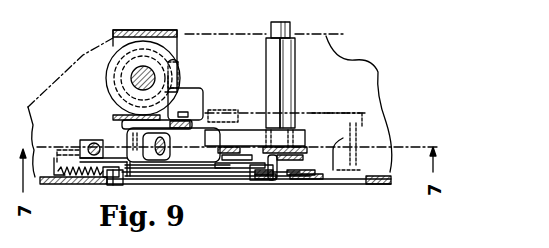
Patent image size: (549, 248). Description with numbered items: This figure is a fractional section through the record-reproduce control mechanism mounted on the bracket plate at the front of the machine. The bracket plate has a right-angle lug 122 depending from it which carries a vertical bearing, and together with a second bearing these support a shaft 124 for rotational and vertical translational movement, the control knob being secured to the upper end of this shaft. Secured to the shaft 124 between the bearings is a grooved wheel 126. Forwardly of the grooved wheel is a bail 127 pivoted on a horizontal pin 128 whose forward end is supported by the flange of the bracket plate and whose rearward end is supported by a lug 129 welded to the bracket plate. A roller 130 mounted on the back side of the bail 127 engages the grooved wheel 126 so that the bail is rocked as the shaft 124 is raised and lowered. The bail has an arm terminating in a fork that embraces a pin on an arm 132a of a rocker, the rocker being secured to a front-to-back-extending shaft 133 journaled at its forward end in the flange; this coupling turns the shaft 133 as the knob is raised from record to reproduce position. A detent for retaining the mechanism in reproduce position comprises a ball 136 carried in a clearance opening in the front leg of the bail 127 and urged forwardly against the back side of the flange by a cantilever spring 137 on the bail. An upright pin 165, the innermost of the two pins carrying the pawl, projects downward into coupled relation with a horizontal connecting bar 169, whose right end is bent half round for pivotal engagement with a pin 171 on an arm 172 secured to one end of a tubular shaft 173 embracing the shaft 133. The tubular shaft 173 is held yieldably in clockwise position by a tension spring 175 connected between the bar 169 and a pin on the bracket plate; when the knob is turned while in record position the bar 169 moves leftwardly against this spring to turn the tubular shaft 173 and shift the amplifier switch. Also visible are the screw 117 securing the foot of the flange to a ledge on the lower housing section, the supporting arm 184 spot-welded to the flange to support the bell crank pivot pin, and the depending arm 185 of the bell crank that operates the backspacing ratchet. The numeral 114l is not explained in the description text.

The right-angle lug 122 is at (133, 30).
The shaft 124 is at (160, 72).
The grooved wheel 126 is at (118, 55).
The horizontal pin 128 is at (190, 80).
The lug 129 is at (197, 97).
The roller 130 is at (125, 118).
The shaft 133 is at (283, 27).
The ball 136 is at (173, 179).
The cantilever spring 137 is at (113, 118).
The upright pin 165 is at (228, 110).
The horizontal connecting bar 169 is at (100, 131).
The pin 171 is at (310, 113).
The arm 172 is at (310, 150).
The tubular shaft 173 is at (359, 104).
The tension spring 175 is at (82, 184).
The supporting arm 184 is at (313, 184).
The depending arm 185 is at (244, 113).
The screw 117 is at (126, 184).
The bail 127 is at (226, 184).
The arm of rocker 132a is at (255, 174).
The base 114l is at (385, 201).